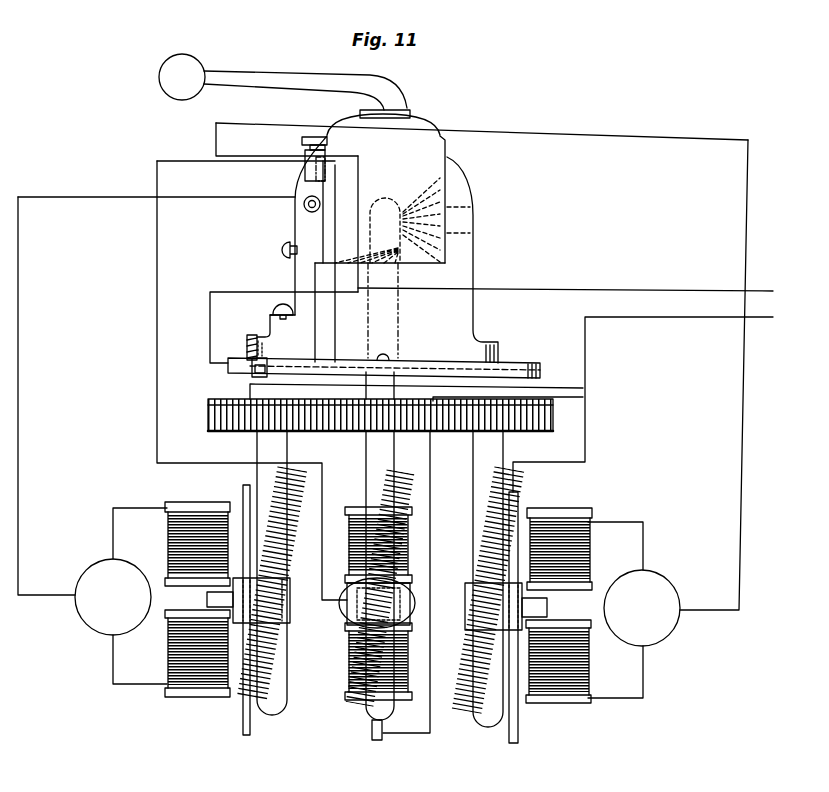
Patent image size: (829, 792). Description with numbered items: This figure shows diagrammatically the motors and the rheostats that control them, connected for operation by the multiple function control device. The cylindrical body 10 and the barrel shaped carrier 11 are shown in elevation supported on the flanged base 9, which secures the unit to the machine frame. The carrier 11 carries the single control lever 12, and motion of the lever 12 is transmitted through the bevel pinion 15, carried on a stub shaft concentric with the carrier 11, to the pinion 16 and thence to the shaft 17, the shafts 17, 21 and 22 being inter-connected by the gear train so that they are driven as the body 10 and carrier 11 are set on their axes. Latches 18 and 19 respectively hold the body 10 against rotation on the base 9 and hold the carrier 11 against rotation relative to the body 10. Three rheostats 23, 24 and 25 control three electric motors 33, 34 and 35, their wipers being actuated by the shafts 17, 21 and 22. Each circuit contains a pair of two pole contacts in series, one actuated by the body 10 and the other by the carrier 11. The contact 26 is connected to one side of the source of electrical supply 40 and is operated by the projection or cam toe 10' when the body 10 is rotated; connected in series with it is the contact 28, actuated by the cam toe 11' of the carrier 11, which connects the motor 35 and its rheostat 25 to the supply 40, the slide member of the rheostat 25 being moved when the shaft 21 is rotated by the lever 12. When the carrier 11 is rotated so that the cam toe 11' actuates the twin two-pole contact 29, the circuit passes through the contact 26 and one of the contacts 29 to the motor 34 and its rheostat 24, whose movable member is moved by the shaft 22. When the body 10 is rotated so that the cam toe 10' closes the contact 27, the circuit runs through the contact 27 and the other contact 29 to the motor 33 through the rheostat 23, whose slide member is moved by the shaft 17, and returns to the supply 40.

The flanged base 9 is at (228, 366).
The cylindrical body 10 is at (360, 259).
The projection or cam toe 10' is at (247, 333).
The barrel shaped carrier 11 is at (381, 202).
The cam toe 11' is at (325, 125).
The control lever 12 is at (297, 83).
The bevel pinion 15 is at (476, 187).
The pinion 16 is at (355, 246).
The shaft 17 is at (370, 450).
The latch 18 is at (272, 306).
The latch 19 is at (281, 250).
The shaft 21 is at (262, 445).
The shaft 22 is at (493, 446).
The rheostat 23 is at (378, 603).
The rheostat 24 is at (528, 605).
The rheostat 25 is at (227, 599).
The contact 26 is at (268, 357).
The contact 27 is at (391, 357).
The contact 28 is at (305, 207).
The twin two-pole contact 29 is at (307, 163).
The motor 33 is at (344, 616).
The motor 34 is at (658, 633).
The motor 35 is at (105, 621).
The source of electrical supply 40 is at (694, 303).